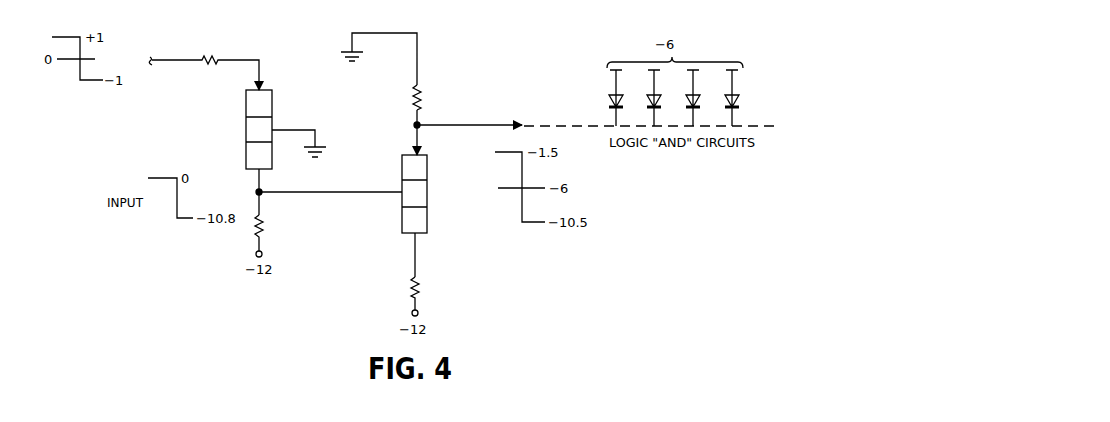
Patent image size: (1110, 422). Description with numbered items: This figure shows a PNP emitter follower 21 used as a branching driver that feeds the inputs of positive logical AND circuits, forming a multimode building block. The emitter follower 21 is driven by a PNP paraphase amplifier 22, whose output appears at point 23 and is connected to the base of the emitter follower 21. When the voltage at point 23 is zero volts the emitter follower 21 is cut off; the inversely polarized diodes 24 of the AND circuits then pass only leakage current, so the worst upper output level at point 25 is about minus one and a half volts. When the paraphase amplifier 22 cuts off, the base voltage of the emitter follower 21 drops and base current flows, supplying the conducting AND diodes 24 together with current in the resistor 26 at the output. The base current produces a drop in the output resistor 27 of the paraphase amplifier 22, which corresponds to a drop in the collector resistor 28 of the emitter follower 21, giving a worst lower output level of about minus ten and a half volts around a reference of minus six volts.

The PNP emitter follower 21 is at (431, 207).
The PNP paraphase amplifier 22 is at (244, 148).
The paraphase amplifier output point 23 is at (260, 194).
The diodes of the logical AND circuits 24 is at (612, 100).
The output point 25 is at (419, 123).
The resistor 26 is at (414, 98).
The output resistor of the paraphase voltage amplifier 27 is at (262, 236).
The collector resistor of the emitter follower 28 is at (418, 294).